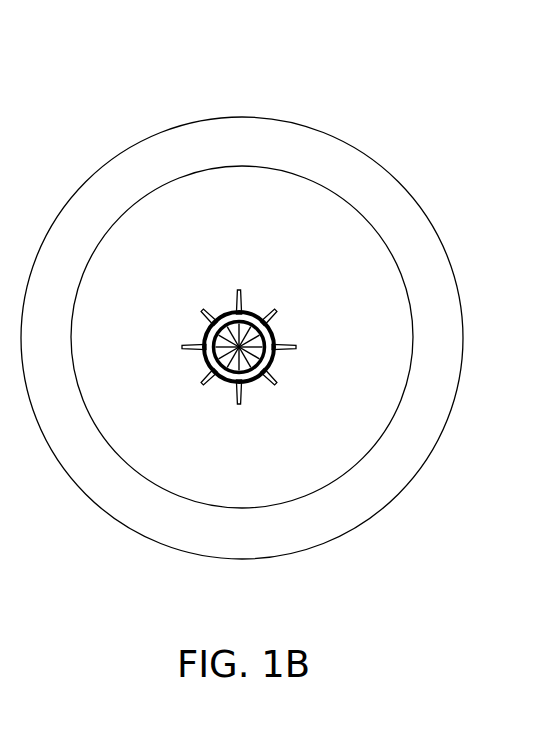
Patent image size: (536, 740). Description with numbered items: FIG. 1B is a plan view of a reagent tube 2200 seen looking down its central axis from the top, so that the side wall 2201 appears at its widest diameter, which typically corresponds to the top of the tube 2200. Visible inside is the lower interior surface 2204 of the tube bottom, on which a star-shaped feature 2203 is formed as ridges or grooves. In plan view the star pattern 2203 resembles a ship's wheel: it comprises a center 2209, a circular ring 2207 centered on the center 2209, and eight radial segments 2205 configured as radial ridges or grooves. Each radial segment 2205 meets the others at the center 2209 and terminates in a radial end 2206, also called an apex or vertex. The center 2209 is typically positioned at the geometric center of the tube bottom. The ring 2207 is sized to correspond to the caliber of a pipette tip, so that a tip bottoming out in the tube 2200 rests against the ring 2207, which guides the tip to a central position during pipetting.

The reagent tube 2200 is at (136, 84).
The side wall 2201 is at (415, 217).
The star-shaped feature 2203 is at (220, 390).
The interior surface 2204 is at (143, 277).
The radial segments 2205 is at (282, 342).
The radial end 2206 is at (277, 375).
The circular ring 2207 is at (247, 375).
The center 2209 is at (245, 323).